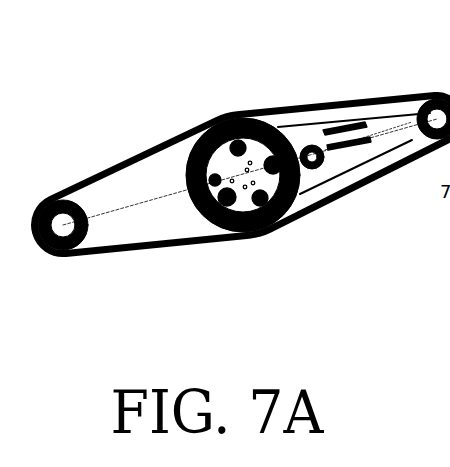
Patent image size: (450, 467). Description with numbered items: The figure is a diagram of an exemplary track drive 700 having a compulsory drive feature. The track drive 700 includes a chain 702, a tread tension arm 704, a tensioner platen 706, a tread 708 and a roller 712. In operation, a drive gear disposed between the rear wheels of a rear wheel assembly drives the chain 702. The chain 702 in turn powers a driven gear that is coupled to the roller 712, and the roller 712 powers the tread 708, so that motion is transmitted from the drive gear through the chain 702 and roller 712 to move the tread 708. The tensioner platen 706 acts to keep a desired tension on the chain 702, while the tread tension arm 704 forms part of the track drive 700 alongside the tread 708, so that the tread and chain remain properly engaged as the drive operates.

The track drive 700 is at (118, 119).
The chain 702 is at (313, 127).
The tread tension arm 704 is at (221, 160).
The tensioner platen 706 is at (215, 240).
The tread 708 is at (328, 198).
The roller 712 is at (418, 86).